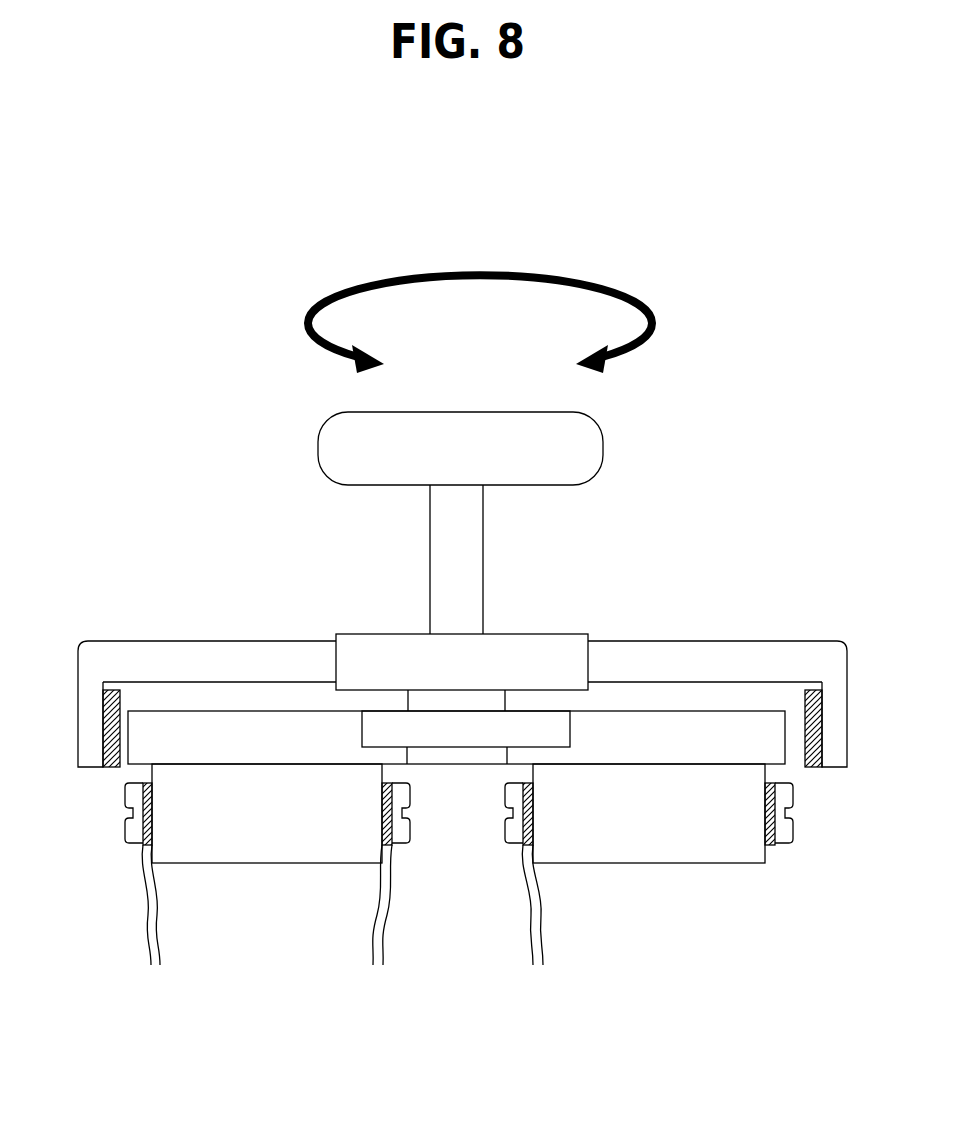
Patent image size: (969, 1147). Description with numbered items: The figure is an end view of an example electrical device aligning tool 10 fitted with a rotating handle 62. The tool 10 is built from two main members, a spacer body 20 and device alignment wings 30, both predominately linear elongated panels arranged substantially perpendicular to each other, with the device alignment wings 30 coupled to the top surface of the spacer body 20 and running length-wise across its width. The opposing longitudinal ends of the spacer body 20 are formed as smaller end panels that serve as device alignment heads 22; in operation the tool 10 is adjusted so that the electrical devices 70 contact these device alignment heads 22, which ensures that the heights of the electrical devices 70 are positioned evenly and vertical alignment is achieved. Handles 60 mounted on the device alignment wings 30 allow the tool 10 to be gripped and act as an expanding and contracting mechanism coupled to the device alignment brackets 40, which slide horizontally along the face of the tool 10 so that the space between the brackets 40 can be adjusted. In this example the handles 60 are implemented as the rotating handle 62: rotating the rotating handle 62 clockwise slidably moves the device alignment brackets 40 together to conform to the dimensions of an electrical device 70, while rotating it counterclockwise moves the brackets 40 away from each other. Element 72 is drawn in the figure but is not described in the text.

The electrical device aligning tool 10 is at (679, 420).
The spacer body 20 is at (472, 779).
The device alignment heads 22 is at (561, 748).
The device alignment wings 30 is at (202, 628).
The device alignment brackets 40 is at (88, 782).
The handles 60 is at (495, 578).
The rotating handle 62 is at (328, 474).
The electrical devices 70 is at (647, 879).
The seal member 72 is at (787, 747).